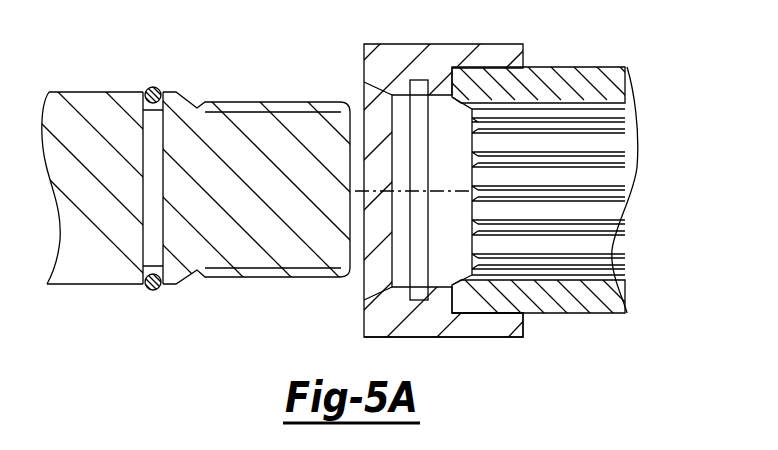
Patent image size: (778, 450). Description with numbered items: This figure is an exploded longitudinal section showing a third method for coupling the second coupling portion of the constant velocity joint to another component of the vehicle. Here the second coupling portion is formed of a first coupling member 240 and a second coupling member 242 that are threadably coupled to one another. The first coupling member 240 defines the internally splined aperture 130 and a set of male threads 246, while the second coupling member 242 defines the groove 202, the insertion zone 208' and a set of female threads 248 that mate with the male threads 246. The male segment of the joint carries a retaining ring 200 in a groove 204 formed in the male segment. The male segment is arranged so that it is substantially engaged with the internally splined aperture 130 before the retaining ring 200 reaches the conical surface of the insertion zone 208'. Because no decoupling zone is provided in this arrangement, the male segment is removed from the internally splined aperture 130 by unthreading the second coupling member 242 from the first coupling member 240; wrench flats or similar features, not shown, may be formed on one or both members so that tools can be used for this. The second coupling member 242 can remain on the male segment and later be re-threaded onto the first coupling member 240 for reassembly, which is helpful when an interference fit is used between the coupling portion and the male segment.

The internally splined aperture 130 is at (628, 138).
The retaining ring 200 is at (153, 87).
The groove 202 is at (419, 92).
The groove 204 is at (146, 277).
The insertion zone 208' is at (342, 74).
The first coupling member 240 is at (547, 70).
The second coupling member 242 is at (514, 44).
The male threads 246 is at (507, 313).
The female threads 248 is at (481, 316).